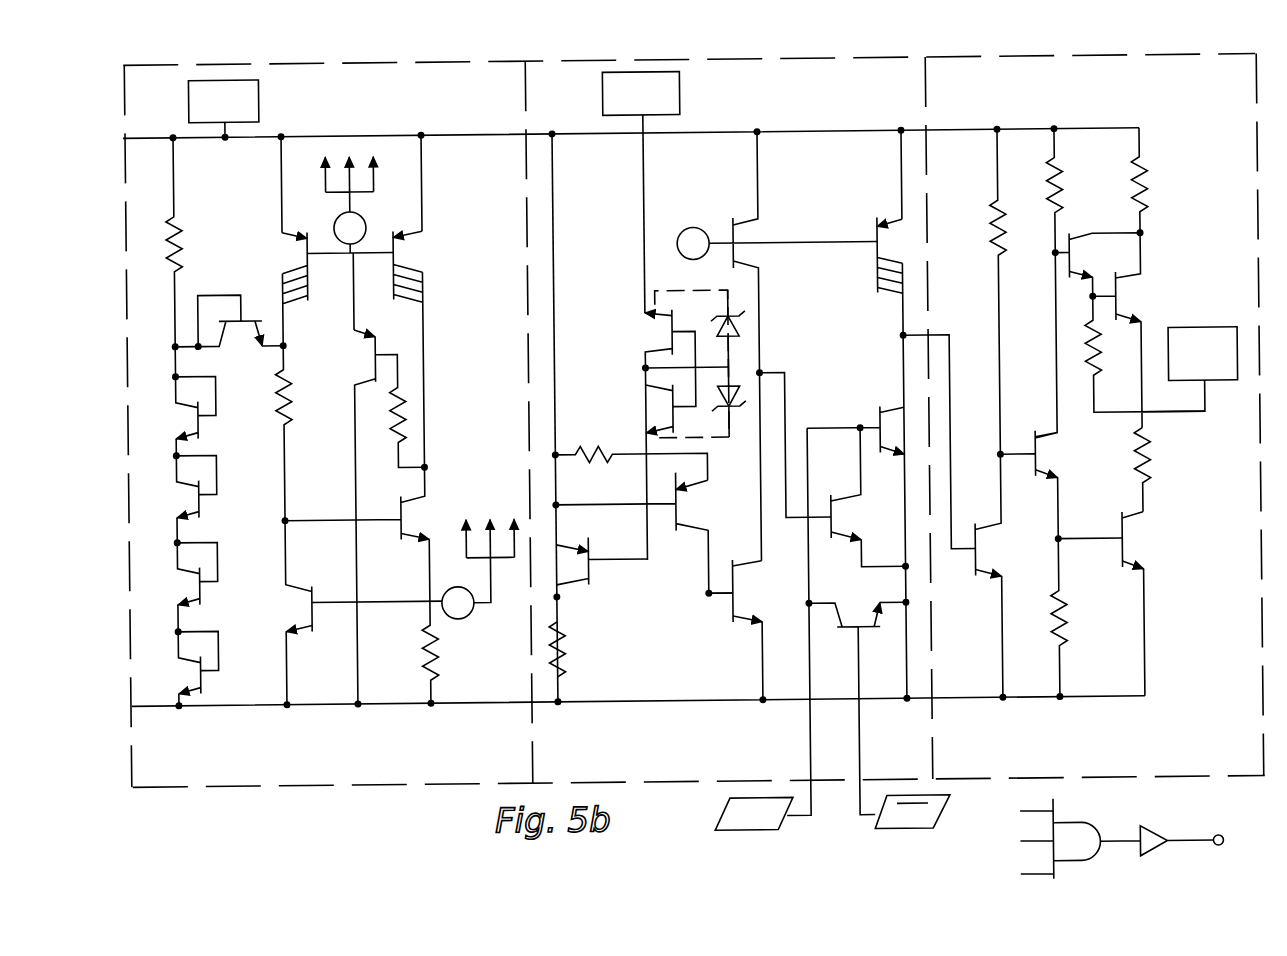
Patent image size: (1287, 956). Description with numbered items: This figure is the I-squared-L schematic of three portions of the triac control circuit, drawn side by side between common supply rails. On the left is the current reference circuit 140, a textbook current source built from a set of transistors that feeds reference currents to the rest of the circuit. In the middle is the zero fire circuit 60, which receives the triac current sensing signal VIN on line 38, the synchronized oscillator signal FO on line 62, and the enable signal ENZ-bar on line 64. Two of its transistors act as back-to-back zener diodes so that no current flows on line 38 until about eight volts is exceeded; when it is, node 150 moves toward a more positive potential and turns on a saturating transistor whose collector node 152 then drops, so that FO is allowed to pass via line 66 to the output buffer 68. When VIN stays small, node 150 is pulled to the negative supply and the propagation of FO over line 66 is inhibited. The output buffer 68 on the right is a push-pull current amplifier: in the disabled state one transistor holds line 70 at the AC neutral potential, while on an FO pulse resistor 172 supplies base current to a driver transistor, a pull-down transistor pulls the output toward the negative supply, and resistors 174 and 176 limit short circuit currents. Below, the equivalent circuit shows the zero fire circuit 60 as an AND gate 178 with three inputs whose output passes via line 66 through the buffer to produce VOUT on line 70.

The current reference circuit 140 is at (423, 59).
The zero fire circuit 60 is at (678, 59).
The output buffer 68 is at (1047, 59).
The line carrying VIN 38 is at (646, 192).
The resistor 172 is at (990, 224).
The resistor 176 is at (1146, 216).
The resistor 174 is at (1131, 477).
The line 66 is at (950, 355).
The node 152 is at (762, 374).
The node 150 is at (706, 600).
The line carrying FO 62 is at (807, 763).
The line carrying ENZ 64 is at (858, 757).
The line carrying VOUT 70 is at (1148, 418).
The AND gate 178 is at (1074, 853).